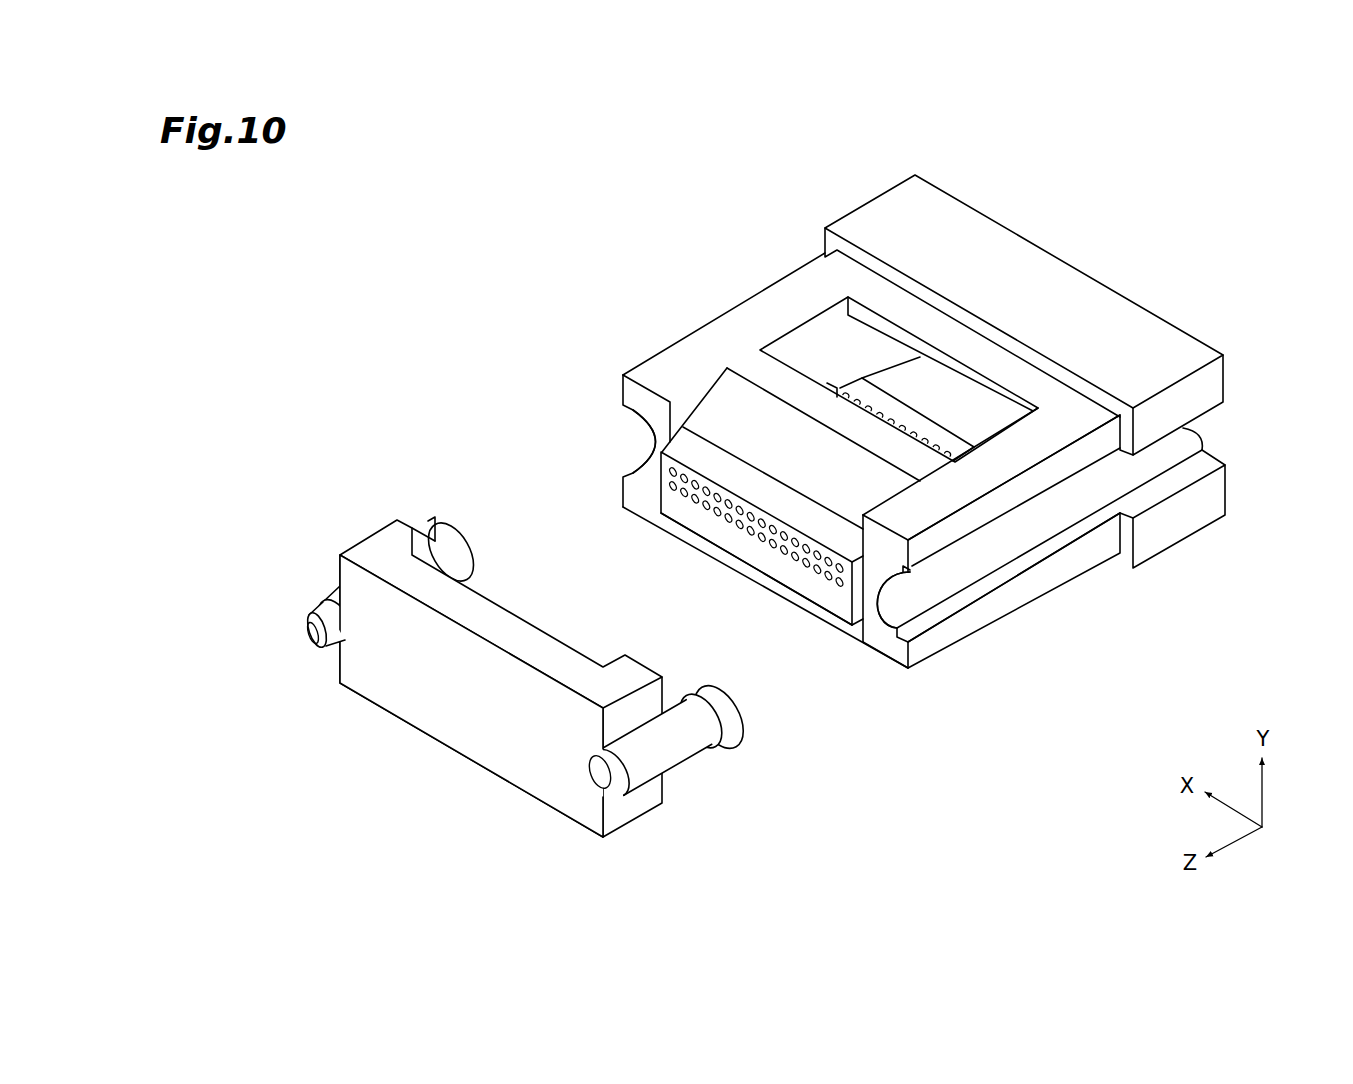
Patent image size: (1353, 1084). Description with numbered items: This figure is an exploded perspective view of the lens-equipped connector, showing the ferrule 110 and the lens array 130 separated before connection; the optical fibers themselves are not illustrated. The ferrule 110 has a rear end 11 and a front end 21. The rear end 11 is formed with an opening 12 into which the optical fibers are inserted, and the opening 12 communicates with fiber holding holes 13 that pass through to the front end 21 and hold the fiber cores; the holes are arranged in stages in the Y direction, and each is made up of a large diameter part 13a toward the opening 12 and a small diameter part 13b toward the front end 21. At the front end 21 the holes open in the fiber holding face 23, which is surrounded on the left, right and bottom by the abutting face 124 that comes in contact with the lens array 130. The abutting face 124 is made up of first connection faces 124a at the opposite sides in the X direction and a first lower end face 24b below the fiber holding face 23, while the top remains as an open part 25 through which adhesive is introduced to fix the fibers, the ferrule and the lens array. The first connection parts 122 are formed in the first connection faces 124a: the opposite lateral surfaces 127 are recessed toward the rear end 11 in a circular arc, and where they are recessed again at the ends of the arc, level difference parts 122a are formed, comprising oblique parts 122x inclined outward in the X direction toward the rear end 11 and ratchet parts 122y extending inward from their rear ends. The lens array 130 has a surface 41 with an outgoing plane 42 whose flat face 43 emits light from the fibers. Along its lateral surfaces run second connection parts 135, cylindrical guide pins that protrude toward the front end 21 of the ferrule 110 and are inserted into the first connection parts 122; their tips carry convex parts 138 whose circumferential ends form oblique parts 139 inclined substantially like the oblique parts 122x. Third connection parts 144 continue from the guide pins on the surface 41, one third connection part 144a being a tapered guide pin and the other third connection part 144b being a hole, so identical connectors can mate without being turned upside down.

The ferrule 110 is at (750, 227).
The rear end 11 is at (903, 169).
The opening 12 is at (1067, 257).
The fiber holding holes 13 is at (907, 425).
The large diameter part 13a is at (874, 412).
The small diameter part 13b is at (707, 493).
The front end 21 is at (641, 361).
The fiber holding face 23 is at (730, 546).
The first lower end face 24b is at (779, 589).
The open part 25 is at (756, 428).
The first connection parts 122 is at (653, 452).
The level difference parts 122a is at (1084, 621).
The oblique parts 122x is at (926, 567).
The ratchet parts 122y is at (925, 612).
The abutting face 124 is at (873, 719).
The first connection faces 124a is at (890, 645).
The opposite lateral surfaces 127 is at (1032, 486).
The lens array 130 is at (316, 543).
The surface 41 is at (316, 578).
The outgoing plane 42 is at (492, 677).
The flat face 43 is at (466, 706).
The second connection parts 135 is at (478, 552).
The convex parts 138 is at (428, 516).
The oblique parts 139 is at (727, 684).
The third connection parts 144 is at (471, 717).
The third connection part (tapered guide pin) 144a is at (307, 638).
The third connection part (hole) 144b is at (599, 777).